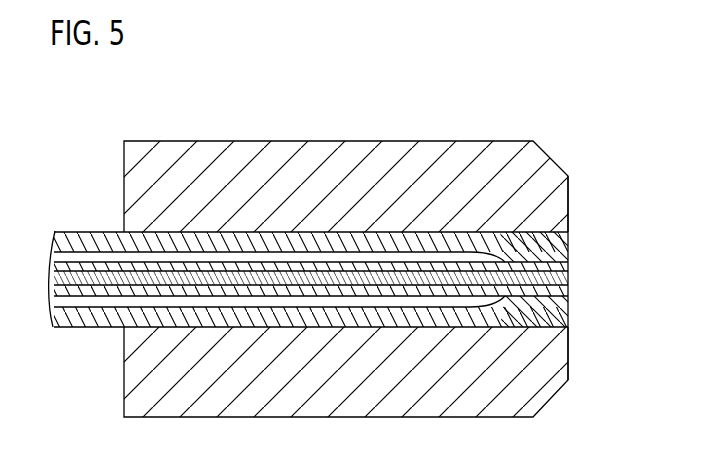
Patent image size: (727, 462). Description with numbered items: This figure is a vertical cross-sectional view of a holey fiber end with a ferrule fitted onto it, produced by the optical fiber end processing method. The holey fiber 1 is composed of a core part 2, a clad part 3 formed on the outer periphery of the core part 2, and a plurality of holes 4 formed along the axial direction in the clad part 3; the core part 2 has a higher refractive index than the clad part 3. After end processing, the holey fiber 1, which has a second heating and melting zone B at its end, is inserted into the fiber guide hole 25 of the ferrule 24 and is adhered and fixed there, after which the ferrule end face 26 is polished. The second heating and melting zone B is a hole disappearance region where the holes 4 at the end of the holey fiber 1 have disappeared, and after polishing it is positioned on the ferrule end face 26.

The holey fiber 1 is at (88, 232).
The core part 2 is at (569, 278).
The clad part 3 is at (569, 254).
The holes 4 is at (303, 257).
The ferrule 24 is at (410, 140).
The fiber guide hole 25 is at (533, 323).
The ferrule end face 26 is at (570, 205).
The second heating and melting zone B is at (531, 255).